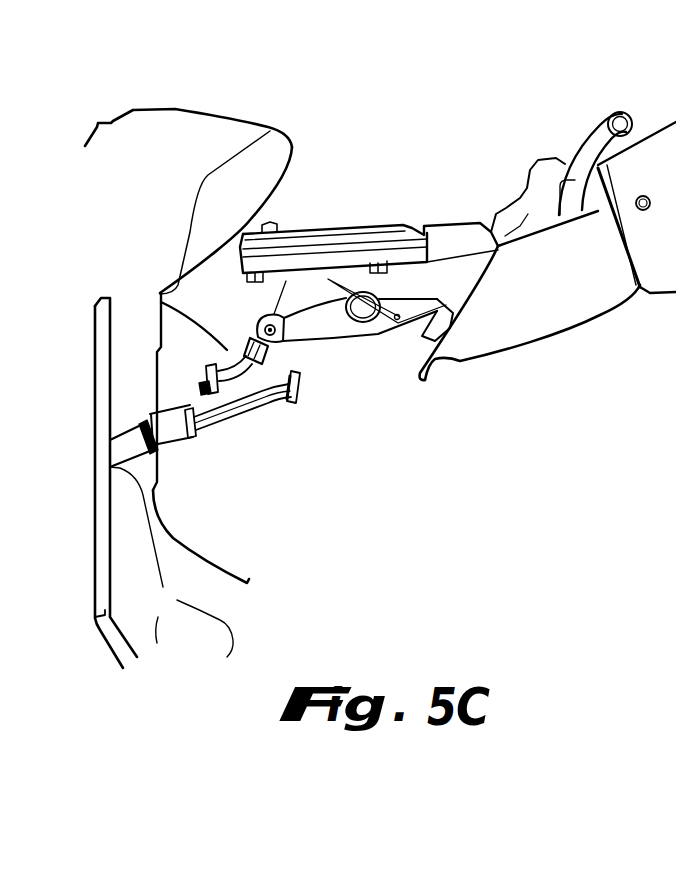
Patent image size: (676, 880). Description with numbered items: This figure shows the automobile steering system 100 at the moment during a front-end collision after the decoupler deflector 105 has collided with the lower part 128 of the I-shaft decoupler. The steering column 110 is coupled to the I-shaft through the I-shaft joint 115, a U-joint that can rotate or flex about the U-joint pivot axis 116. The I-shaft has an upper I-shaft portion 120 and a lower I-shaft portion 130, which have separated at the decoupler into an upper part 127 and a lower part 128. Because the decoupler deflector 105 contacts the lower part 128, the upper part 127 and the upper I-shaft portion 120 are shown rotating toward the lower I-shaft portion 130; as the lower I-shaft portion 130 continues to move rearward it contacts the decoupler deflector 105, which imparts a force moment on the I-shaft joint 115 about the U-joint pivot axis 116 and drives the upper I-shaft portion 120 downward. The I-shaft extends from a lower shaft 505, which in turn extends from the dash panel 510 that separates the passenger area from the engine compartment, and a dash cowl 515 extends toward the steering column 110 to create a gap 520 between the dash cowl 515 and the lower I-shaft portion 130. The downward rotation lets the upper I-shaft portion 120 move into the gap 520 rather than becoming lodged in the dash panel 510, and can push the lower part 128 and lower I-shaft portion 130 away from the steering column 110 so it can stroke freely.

The steering system 100 is at (404, 102).
The decoupler deflector 105 is at (273, 371).
The steering column 110 is at (362, 218).
The I-shaft joint 115 is at (276, 376).
The U-joint pivot axis 116 is at (247, 308).
The upper I-shaft portion 120 is at (162, 299).
The upper part of the I-shaft decoupler 127 is at (206, 382).
The lower part of the I-shaft decoupler 128 is at (298, 403).
The lower I-shaft portion 130 is at (244, 410).
The lower shaft 505 is at (168, 435).
The dash panel 510 is at (243, 578).
The dash cowl 515 is at (286, 168).
The gap 520 is at (278, 207).